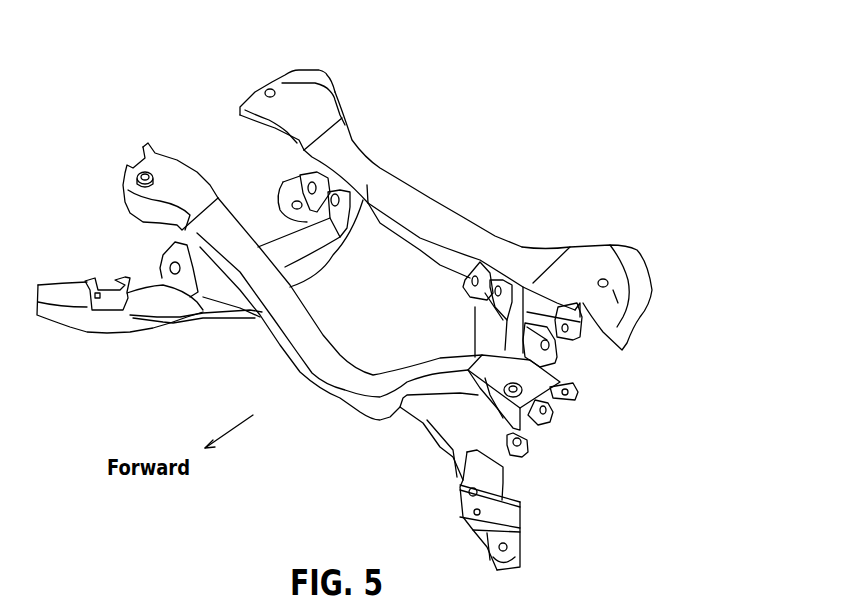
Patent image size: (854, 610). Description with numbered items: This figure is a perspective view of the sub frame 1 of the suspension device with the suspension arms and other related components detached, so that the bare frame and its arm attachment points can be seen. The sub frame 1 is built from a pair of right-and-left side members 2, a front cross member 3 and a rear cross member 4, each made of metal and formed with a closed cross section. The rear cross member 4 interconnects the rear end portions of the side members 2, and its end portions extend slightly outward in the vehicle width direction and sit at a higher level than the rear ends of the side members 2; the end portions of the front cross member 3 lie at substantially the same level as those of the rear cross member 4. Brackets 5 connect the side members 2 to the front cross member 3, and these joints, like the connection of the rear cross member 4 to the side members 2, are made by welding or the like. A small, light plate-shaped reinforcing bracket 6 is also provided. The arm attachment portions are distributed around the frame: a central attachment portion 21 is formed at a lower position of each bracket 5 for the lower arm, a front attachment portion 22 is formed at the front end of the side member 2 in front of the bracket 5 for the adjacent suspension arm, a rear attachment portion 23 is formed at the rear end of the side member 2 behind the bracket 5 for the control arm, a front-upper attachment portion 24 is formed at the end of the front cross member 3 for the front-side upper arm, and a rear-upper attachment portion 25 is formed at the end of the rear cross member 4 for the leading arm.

The sub frame 1 is at (560, 132).
The side member 2 is at (120, 323).
The front cross member 3 is at (310, 373).
The rear cross member 4 is at (447, 215).
The bracket 5 is at (223, 290).
The plate-shaped reinforcing bracket 6 is at (173, 318).
The central attachment portion 21 is at (173, 260).
The front attachment portion 22 is at (82, 280).
The rear attachment portion 23 is at (273, 197).
The front-upper attachment portion 24 is at (148, 147).
The rear-upper attachment portion 25 is at (302, 73).